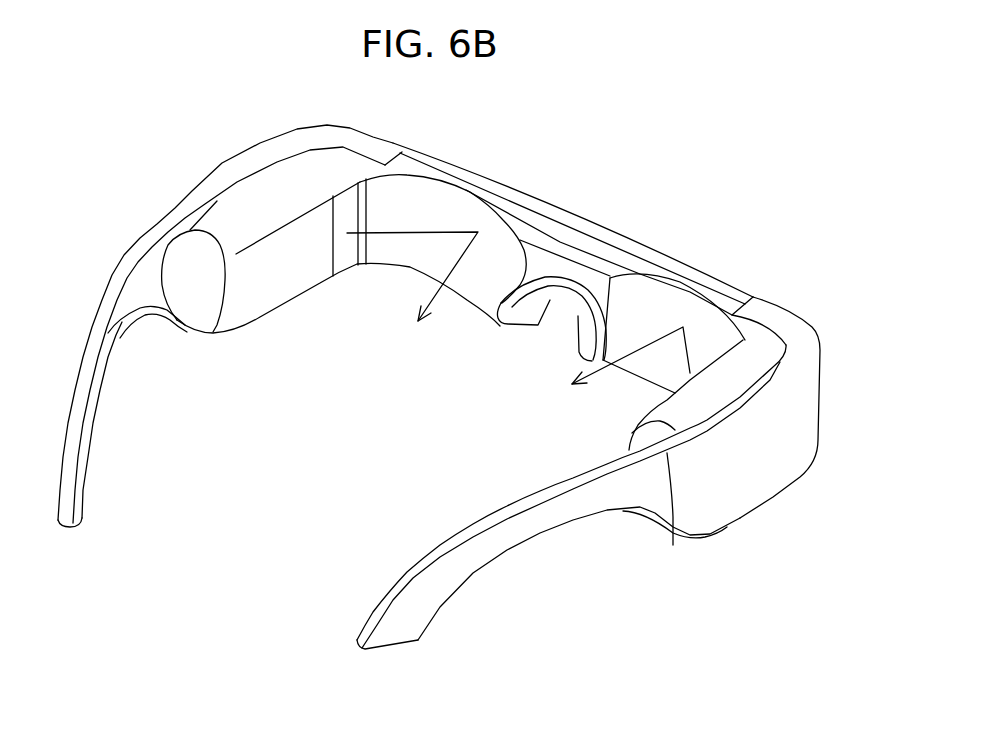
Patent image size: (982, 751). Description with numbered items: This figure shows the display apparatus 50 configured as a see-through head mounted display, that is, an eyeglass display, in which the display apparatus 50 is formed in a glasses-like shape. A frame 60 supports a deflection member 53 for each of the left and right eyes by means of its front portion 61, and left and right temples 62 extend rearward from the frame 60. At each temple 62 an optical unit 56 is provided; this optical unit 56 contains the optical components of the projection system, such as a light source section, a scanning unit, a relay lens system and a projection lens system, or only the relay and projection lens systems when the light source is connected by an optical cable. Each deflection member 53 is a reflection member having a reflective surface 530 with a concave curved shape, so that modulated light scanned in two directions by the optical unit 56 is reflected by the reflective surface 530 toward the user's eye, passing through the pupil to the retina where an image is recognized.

The display apparatus 50 is at (690, 152).
The deflection member 53 is at (470, 188).
The reflective surface 530 is at (485, 283).
The optical unit 56 is at (277, 187).
The frame 60 is at (157, 224).
The front portion 61 is at (540, 199).
The temple 62 is at (192, 191).